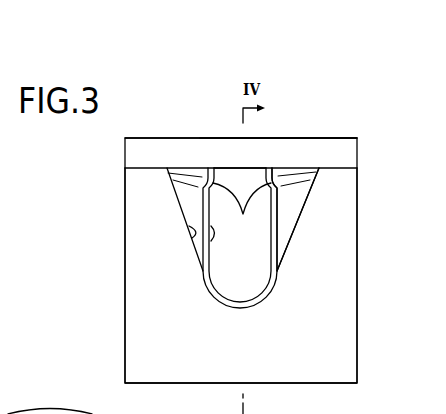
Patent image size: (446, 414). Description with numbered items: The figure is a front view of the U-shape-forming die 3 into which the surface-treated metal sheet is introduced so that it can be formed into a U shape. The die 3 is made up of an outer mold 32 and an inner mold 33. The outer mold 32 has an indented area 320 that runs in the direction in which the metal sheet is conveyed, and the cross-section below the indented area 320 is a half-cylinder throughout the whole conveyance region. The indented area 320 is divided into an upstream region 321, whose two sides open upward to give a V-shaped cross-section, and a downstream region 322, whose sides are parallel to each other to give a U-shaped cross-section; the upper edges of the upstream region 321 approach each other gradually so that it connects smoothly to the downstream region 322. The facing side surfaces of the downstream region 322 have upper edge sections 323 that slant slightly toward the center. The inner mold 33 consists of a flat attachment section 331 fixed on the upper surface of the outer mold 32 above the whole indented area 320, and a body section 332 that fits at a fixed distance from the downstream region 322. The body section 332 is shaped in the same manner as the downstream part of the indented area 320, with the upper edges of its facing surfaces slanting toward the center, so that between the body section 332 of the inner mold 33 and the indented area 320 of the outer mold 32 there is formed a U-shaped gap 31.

The U-shape-forming die 3 is at (374, 153).
The gap 31 is at (278, 236).
The outer mold 32 is at (343, 316).
The inner mold 33 is at (393, 85).
The indented area 320 is at (225, 253).
The upstream region 321 is at (193, 228).
The downstream region 322 is at (204, 250).
The upper edge sections 323 is at (242, 215).
The attachment section 331 is at (337, 140).
The body section 332 is at (258, 177).